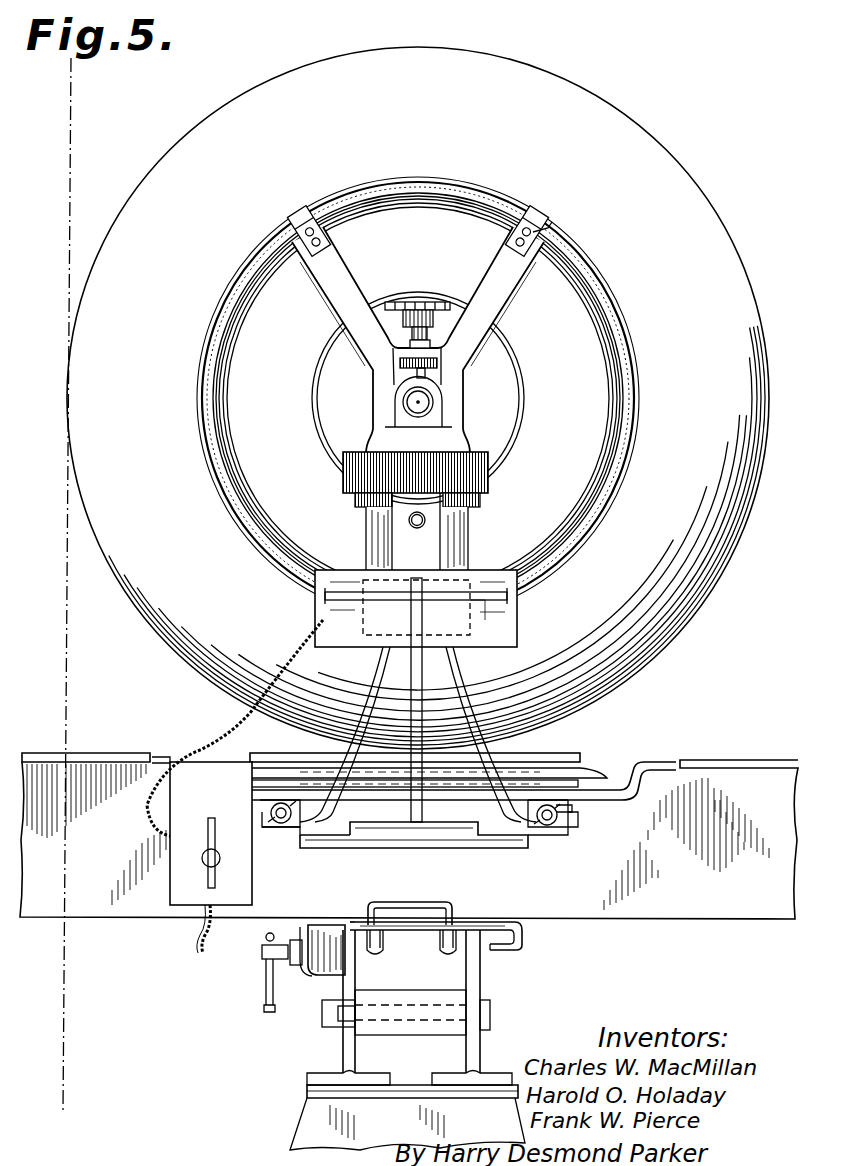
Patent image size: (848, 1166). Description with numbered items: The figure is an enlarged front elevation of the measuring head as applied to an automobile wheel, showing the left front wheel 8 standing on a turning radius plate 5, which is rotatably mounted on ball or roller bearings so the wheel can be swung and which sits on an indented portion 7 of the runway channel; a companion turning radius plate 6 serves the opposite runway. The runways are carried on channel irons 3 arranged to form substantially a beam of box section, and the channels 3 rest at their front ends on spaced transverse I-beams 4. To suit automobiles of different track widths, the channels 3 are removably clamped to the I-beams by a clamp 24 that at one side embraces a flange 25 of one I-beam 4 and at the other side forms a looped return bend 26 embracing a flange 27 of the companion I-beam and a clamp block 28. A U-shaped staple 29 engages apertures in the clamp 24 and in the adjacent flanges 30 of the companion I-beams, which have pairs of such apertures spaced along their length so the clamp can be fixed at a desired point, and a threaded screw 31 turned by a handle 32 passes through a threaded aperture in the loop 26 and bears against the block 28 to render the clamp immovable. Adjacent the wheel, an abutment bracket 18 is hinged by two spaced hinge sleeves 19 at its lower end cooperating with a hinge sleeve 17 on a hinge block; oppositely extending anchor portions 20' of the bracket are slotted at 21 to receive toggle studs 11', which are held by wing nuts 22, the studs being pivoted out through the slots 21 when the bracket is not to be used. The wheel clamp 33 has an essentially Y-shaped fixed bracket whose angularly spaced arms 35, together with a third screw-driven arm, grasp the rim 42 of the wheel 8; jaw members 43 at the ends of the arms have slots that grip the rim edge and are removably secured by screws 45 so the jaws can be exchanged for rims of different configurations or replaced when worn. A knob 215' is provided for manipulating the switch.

The channel irons 3 is at (700, 900).
The I-beams 4 is at (483, 972).
The turning radius plate 5 is at (568, 752).
The turning radius plate 6 is at (100, 76).
The indented portion 7 is at (626, 774).
The left front wheel 8 is at (700, 612).
The toggle studs 11' is at (278, 838).
The hinge sleeve 17 is at (416, 848).
The abutment bracket 18 is at (478, 698).
The hinge sleeves 19 is at (332, 834).
The anchor portions 20' is at (589, 844).
The slots 21 is at (568, 818).
The wing nuts 22 is at (549, 828).
The clamp 24 is at (485, 924).
The flange 25 is at (498, 937).
The looped return bend 26 is at (302, 930).
The flange 27 is at (316, 928).
The clamp block 28 is at (328, 945).
The U-shaped staple 29 is at (425, 906).
The flanges 30 is at (382, 948).
The threaded screw 31 is at (298, 955).
The handle 32 is at (265, 968).
The wheel clamp 33 is at (470, 382).
The arms 35 is at (330, 300).
The rim 42 is at (612, 300).
The jaw members 43 is at (305, 216).
The screws 45 is at (548, 228).
The knob 215' is at (211, 833).